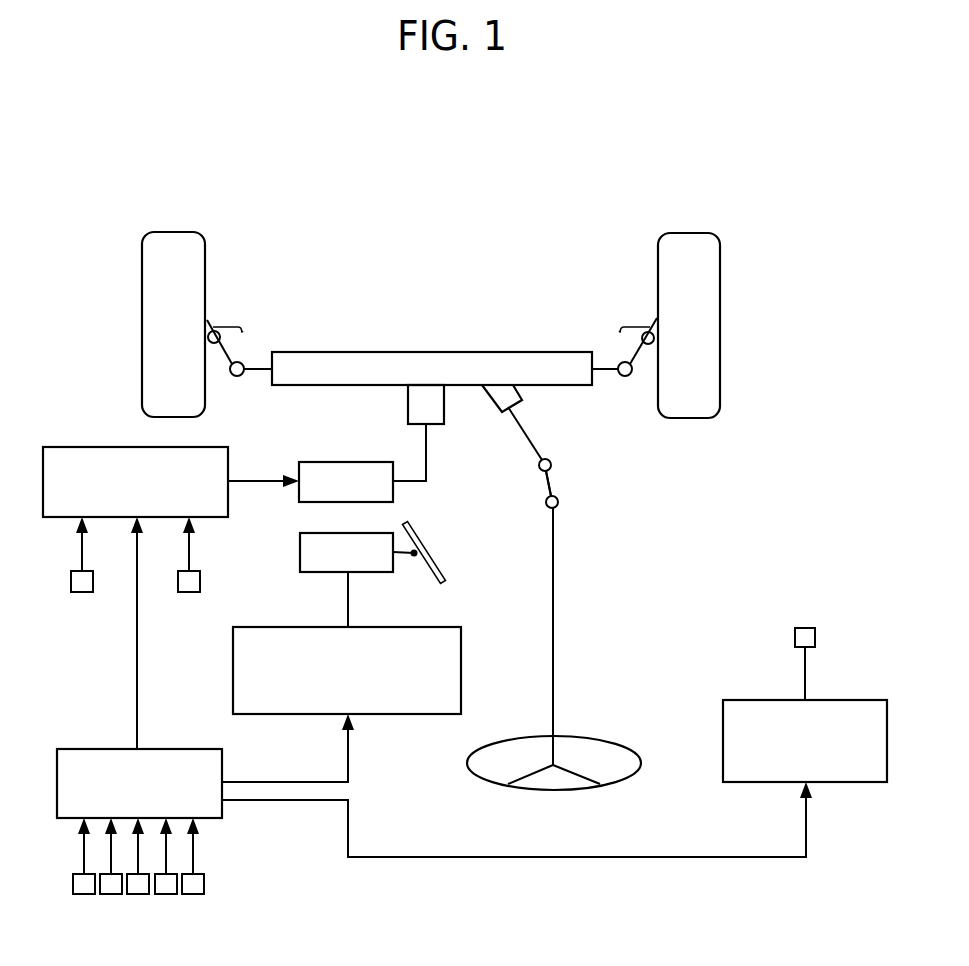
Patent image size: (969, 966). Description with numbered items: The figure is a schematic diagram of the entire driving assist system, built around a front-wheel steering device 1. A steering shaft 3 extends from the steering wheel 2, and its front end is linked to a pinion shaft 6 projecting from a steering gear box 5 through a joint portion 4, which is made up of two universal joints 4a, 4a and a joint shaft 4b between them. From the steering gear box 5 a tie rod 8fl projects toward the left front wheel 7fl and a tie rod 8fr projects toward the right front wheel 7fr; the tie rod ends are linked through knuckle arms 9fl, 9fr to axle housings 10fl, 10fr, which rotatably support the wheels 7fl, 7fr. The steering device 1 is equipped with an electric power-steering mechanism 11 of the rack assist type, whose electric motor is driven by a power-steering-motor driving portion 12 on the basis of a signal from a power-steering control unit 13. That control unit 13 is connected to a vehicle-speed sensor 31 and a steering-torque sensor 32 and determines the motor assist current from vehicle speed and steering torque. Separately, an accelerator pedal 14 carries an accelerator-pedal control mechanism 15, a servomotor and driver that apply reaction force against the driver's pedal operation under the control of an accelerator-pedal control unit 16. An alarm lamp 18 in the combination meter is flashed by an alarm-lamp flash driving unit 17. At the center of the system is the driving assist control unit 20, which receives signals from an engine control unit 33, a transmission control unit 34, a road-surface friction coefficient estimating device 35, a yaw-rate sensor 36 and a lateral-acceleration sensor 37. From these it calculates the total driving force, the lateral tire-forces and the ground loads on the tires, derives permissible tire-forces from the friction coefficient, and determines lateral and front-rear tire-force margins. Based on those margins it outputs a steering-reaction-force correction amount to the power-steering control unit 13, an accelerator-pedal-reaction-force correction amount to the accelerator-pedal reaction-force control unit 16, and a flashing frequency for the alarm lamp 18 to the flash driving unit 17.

The front-wheel steering device 1 is at (396, 183).
The steering wheel 2 is at (641, 762).
The steering shaft 3 is at (556, 668).
The joint portion 4 is at (530, 488).
The universal joint 4a is at (552, 462).
The joint shaft 4b is at (555, 484).
The steering gear box 5 is at (431, 351).
The pinion shaft 6 is at (527, 423).
The left front wheel 7fl is at (176, 232).
The right front wheel 7fr is at (689, 233).
The tie rod 8fl is at (250, 365).
The tie rod 8fr is at (614, 365).
The knuckle arm 9fl is at (228, 372).
The knuckle arm 9fr is at (636, 374).
The axle housing 10fl is at (210, 326).
The axle housing 10fr is at (647, 326).
The electric power-steering mechanism 11 is at (408, 409).
The power-steering-motor driving portion 12 is at (322, 462).
The power-steering control unit 13 is at (93, 447).
The accelerator pedal 14 is at (443, 577).
The accelerator-pedal control mechanism 15 is at (300, 556).
The accelerator-pedal control unit 16 is at (407, 627).
The alarm-lamp flash driving unit 17 is at (750, 700).
The alarm lamp 18 is at (816, 637).
The driving assist control unit 20 is at (94, 749).
The vehicle-speed sensor 31 is at (70, 583).
The steering-torque sensor 32 is at (201, 583).
The engine control unit 33 is at (84, 894).
The transmission control unit 34 is at (111, 894).
The road-surface friction coefficient estimating device 35 is at (138, 894).
The yaw-rate sensor 36 is at (166, 894).
The lateral-acceleration sensor 37 is at (193, 894).